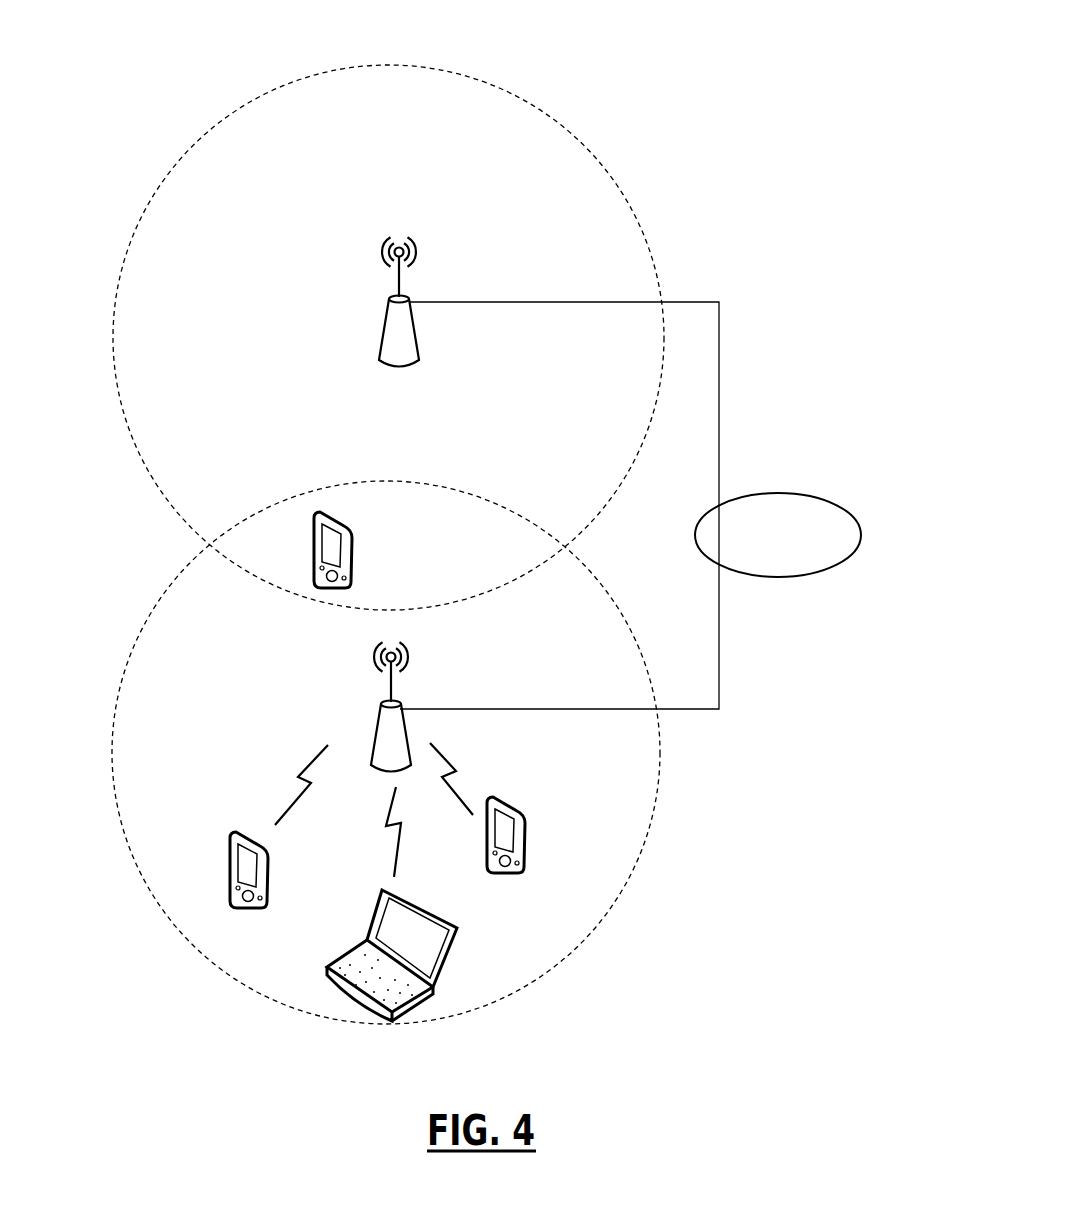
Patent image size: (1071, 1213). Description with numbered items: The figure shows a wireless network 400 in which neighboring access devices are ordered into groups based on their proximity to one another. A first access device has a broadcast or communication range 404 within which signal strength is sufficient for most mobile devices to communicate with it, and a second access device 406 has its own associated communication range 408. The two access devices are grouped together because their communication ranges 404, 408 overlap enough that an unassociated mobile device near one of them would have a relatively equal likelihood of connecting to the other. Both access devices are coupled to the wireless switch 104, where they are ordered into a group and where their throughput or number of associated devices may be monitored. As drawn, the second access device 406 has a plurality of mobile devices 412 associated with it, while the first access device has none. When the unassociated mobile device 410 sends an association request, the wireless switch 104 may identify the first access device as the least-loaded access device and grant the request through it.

The wireless network 400 is at (726, 93).
The communication range 404 is at (224, 116).
The communication range 408 is at (138, 637).
The second access device 406 is at (383, 339).
The unassociated mobile device 410 is at (313, 556).
The mobile devices 412 is at (264, 944).
The wireless switch 104 is at (841, 498).